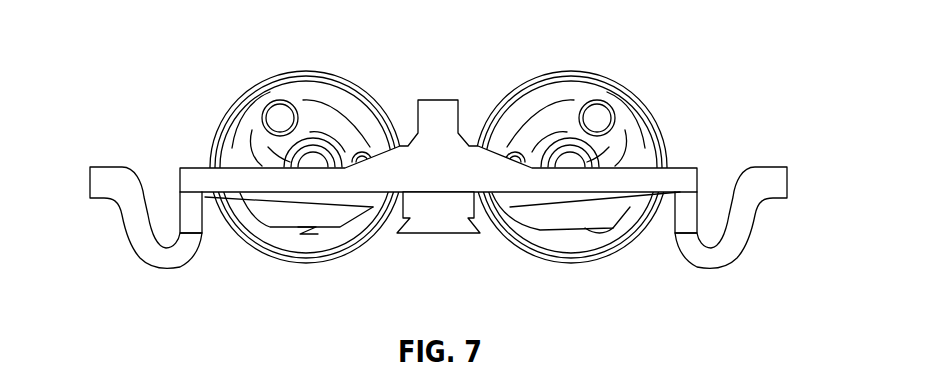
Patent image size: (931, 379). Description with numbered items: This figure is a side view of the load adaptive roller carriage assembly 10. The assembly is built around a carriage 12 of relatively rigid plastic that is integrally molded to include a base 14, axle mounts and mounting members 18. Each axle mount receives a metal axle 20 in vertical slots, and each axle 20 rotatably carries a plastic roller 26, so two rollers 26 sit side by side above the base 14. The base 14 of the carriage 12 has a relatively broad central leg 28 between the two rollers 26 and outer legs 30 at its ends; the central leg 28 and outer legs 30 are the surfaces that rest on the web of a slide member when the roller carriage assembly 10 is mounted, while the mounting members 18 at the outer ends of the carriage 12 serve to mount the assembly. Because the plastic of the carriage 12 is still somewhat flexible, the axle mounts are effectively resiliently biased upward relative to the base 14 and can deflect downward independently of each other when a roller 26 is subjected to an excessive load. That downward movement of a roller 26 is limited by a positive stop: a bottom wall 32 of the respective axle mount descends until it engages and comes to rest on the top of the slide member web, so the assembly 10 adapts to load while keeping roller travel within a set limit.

The load adaptive roller carriage assembly 10 is at (435, 168).
The carriage 12 is at (455, 96).
The base 14 is at (487, 187).
The mounting members 18 is at (107, 192).
The axle 20 is at (312, 160).
The roller 26 is at (333, 87).
The central leg 28 is at (430, 223).
The outer legs 30 is at (188, 228).
The bottom wall 32 is at (318, 227).